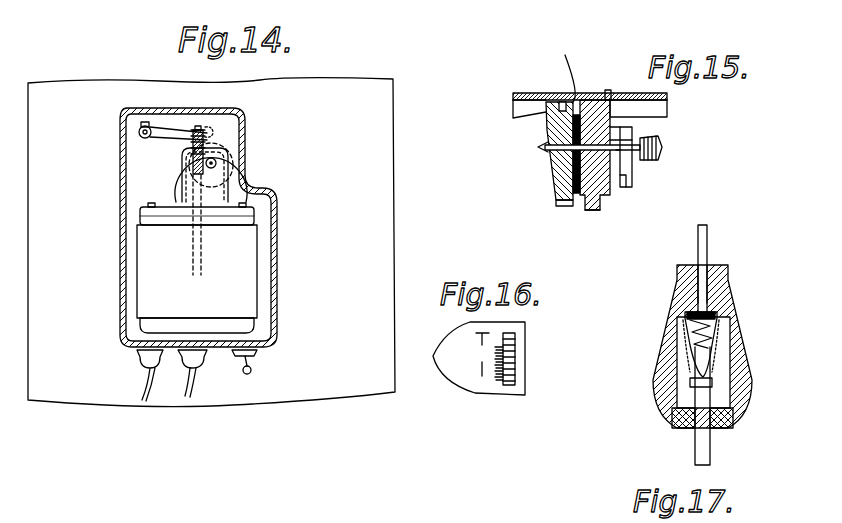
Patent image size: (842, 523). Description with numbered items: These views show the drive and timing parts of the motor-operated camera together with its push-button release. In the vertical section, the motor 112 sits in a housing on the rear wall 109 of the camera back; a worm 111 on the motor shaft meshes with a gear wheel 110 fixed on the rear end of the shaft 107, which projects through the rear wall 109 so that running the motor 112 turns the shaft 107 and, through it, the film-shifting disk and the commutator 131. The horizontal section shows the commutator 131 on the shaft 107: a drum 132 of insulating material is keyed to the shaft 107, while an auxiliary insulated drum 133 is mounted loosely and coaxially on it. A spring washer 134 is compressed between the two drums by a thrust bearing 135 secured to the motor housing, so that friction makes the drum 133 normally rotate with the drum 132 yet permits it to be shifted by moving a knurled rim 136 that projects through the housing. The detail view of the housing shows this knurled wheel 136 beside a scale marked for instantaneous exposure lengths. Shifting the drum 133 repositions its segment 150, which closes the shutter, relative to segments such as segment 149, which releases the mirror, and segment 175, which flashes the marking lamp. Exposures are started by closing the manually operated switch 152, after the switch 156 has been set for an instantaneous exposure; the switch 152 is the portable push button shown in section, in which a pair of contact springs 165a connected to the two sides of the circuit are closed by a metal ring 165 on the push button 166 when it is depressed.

In FIG. 14, the shaft 107 is at (218, 163).
In FIG. 15, the shaft 107 is at (545, 150).
In FIG. 14, the rear wall 109 is at (382, 128).
In FIG. 14, the gear wheel 110 is at (236, 150).
In FIG. 15, the gear wheel 110 is at (655, 162).
In FIG. 14, the worm 111 is at (176, 167).
In FIG. 14, the motor 112 is at (246, 271).
In FIG. 15, the commutator 131 is at (564, 101).
In FIG. 15, the drum 132 is at (560, 182).
In FIG. 15, the auxiliary insulated drum 133 is at (590, 210).
In FIG. 15, the spring washer 134 is at (560, 204).
In FIG. 15, the thrust bearing 135 is at (632, 180).
In FIG. 15, the knurled rim 136 is at (608, 90).
In FIG. 15, the commutator segment 149 is at (546, 96).
In FIG. 15, the commutator segment 150 is at (590, 100).
In FIG. 17, the manually operated switch 152 is at (735, 283).
In FIG. 14, the manually operated switch 156 is at (256, 357).
In FIG. 17, the metal ring 165 is at (711, 393).
In FIG. 17, the contact springs 165a is at (719, 336).
In FIG. 17, the push button 166 is at (710, 446).
In FIG. 15, the commutator segment 175 is at (552, 71).